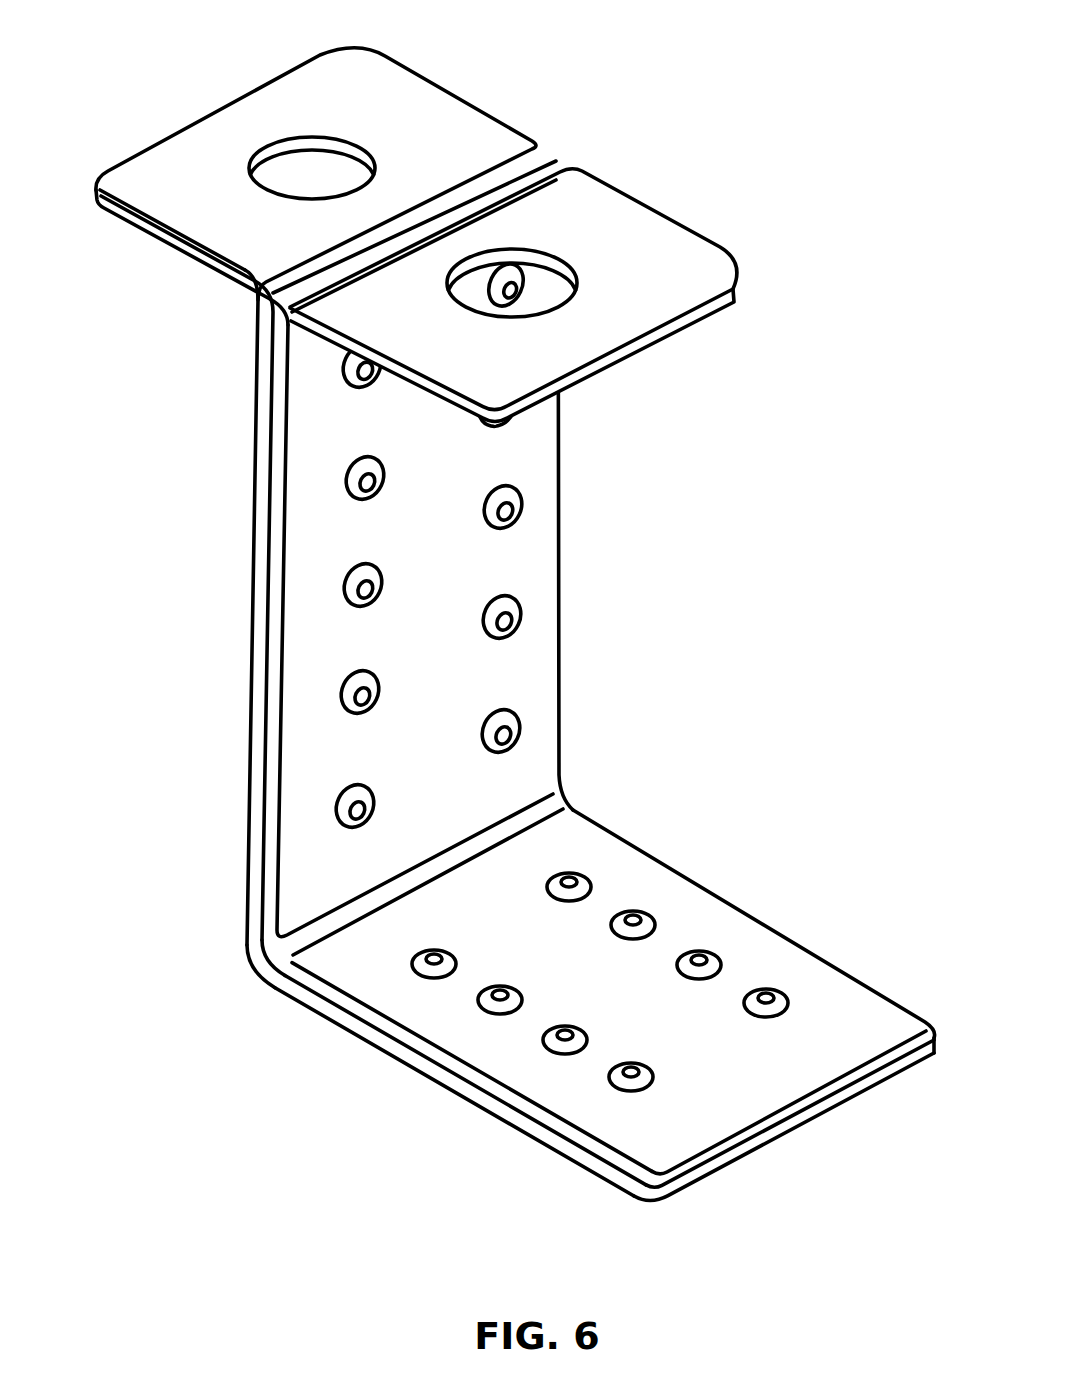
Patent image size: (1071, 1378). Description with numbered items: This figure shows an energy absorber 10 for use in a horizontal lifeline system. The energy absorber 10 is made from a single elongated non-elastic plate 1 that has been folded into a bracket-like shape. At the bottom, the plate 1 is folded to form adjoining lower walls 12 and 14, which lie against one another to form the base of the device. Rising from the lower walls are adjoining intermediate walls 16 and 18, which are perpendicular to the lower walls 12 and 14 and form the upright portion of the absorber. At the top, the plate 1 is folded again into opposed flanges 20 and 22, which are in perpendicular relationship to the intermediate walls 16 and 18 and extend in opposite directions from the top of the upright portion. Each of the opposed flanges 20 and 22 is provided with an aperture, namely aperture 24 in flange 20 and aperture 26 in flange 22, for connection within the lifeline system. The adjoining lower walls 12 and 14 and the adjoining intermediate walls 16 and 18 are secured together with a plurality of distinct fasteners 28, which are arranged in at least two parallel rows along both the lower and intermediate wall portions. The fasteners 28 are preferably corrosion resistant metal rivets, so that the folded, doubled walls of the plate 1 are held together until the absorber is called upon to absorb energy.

The elongated non-elastic plate 1 is at (768, 1117).
The energy absorber 10 is at (132, 42).
The lower wall 12 is at (625, 1142).
The lower wall 14 is at (485, 1112).
The intermediate wall 16 is at (302, 598).
The intermediate wall 18 is at (258, 483).
The flange 20 is at (710, 262).
The flange 22 is at (485, 127).
The aperture 24 is at (533, 285).
The aperture 26 is at (318, 162).
The fasteners 28 is at (340, 810).